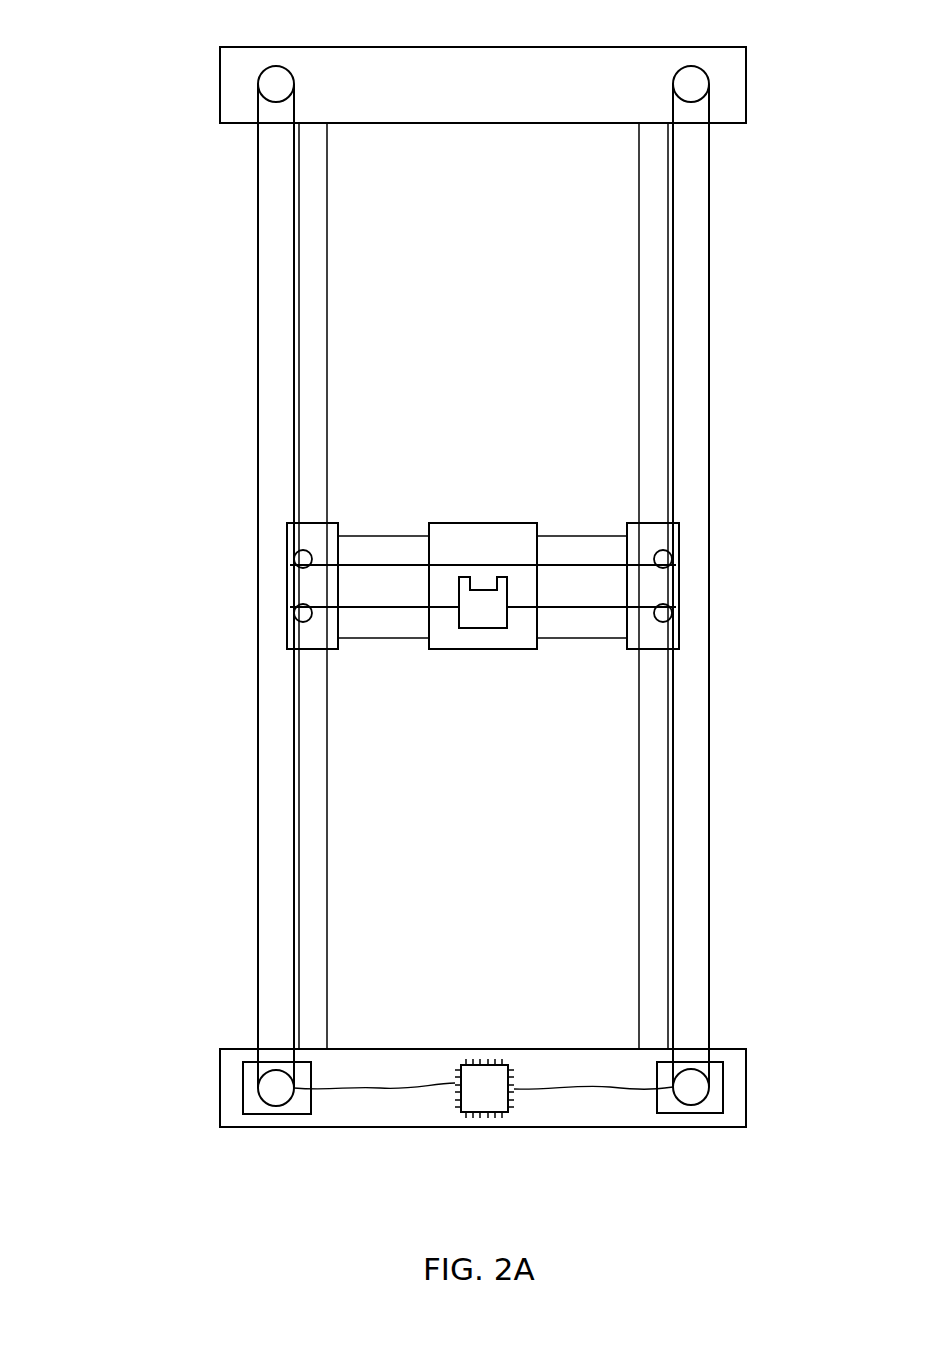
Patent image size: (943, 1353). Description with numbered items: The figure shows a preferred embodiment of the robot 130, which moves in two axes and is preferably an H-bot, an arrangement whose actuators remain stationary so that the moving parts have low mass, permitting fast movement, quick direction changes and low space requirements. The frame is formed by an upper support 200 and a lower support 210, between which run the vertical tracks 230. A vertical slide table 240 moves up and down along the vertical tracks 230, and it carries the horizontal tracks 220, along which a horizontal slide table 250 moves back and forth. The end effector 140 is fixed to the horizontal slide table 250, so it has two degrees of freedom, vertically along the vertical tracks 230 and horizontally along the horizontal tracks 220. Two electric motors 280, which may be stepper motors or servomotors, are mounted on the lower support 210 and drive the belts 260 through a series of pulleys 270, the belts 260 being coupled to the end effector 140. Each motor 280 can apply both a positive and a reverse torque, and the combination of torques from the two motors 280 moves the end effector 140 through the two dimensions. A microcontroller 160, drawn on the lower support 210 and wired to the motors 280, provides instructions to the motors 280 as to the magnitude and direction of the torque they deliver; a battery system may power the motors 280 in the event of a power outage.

The robot 130 is at (157, 62).
The end effector 140 is at (464, 580).
The microcontroller 160 is at (483, 1080).
The upper support 200 is at (472, 102).
The lower support 210 is at (617, 1114).
The horizontal tracks 220 is at (592, 538).
The vertical tracks 230 is at (652, 293).
The vertical slide table 240 is at (663, 587).
The horizontal slide table 250 is at (508, 643).
The belts 260 is at (260, 445).
The pulleys 270 is at (268, 1093).
The electric motors 280 is at (297, 1107).